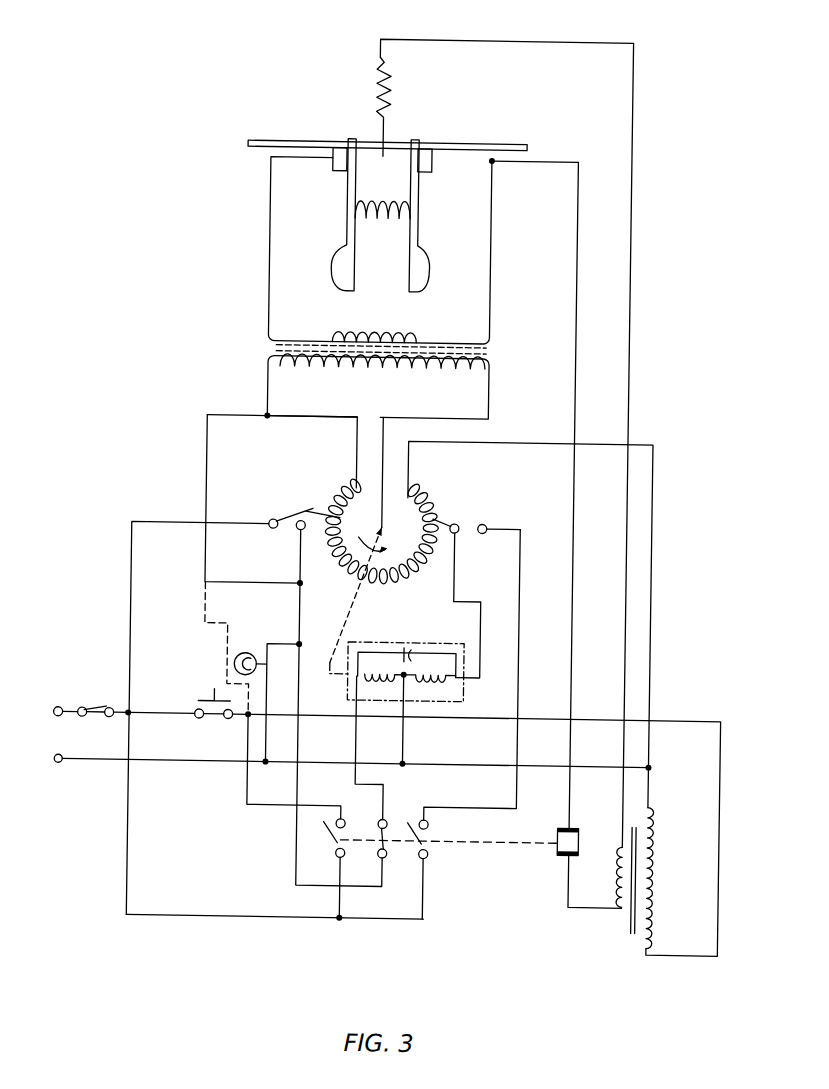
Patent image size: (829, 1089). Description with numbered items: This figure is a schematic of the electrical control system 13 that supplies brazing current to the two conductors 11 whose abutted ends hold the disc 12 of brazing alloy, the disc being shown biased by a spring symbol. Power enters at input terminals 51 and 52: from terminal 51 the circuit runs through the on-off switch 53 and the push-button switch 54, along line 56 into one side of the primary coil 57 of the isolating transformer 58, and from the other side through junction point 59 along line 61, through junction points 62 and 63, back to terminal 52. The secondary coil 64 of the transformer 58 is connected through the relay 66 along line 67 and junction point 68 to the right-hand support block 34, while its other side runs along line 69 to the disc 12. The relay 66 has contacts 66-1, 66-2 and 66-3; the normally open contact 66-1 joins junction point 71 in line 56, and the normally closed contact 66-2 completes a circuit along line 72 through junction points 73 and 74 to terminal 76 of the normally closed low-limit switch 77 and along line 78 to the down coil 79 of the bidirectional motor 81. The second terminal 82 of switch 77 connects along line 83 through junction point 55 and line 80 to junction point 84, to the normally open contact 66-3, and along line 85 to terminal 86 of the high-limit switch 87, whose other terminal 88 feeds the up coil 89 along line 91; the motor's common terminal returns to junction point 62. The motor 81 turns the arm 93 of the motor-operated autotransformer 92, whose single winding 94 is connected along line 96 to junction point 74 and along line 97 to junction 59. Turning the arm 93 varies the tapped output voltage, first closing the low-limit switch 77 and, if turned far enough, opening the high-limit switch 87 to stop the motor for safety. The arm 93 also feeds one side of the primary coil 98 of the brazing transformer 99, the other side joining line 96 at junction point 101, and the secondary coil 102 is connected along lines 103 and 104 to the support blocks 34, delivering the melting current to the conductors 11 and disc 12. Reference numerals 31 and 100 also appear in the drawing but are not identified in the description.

The electrical control system 13 is at (711, 67).
The conductors 11 is at (297, 141).
The disc 12 is at (379, 131).
The support blocks 34 is at (333, 170).
The pole pieces 31 is at (341, 246).
The junction point 68 is at (488, 161).
The line 69 is at (627, 315).
The line 103 is at (265, 288).
The line 104 is at (488, 282).
The secondary coil 102 is at (414, 340).
The brazing transformer 99 is at (494, 350).
The primary coil 98 is at (410, 368).
The junction point 101 is at (267, 415).
The line 96 is at (206, 483).
The line 97 is at (545, 440).
The line 67 is at (573, 573).
The motor-operated autotransformer 92 is at (436, 481).
The arm 93 is at (340, 518).
The winding 94 is at (378, 578).
The wiper arm 100 is at (383, 526).
The low-limit switch 77 is at (313, 506).
The second terminal 82 is at (269, 528).
The terminal 76 is at (299, 530).
The line 83 is at (130, 580).
The junction point 74 is at (298, 582).
The junction point 73 is at (299, 642).
The line 72 is at (269, 680).
The high-limit switch 87 is at (455, 523).
The terminal 86 is at (484, 523).
The terminal 88 is at (457, 532).
The line 91 is at (470, 600).
The line 85 is at (520, 645).
The bidirectional motor 81 is at (407, 647).
The down coil 79 is at (370, 676).
The up coil 89 is at (448, 676).
The junction point 62 is at (406, 767).
The line 78 is at (359, 752).
The push-button switch 54 is at (200, 702).
The input terminal 51 is at (57, 712).
The on-off switch 53 is at (92, 712).
The junction point 55 is at (131, 713).
The junction point 71 is at (249, 719).
The line 56 is at (480, 720).
The input terminal 52 is at (60, 767).
The junction point 63 is at (268, 767).
The line 61 is at (493, 762).
The junction point 59 is at (653, 765).
The relay 66 is at (582, 838).
The secondary coil 64 is at (617, 868).
The primary coil 57 is at (655, 848).
The transformer 58 is at (617, 924).
The relay contact 66-1 is at (341, 850).
The relay contact 66-2 is at (388, 862).
The relay contact 66-3 is at (430, 856).
The junction point 84 is at (344, 921).
The line 80 is at (178, 917).